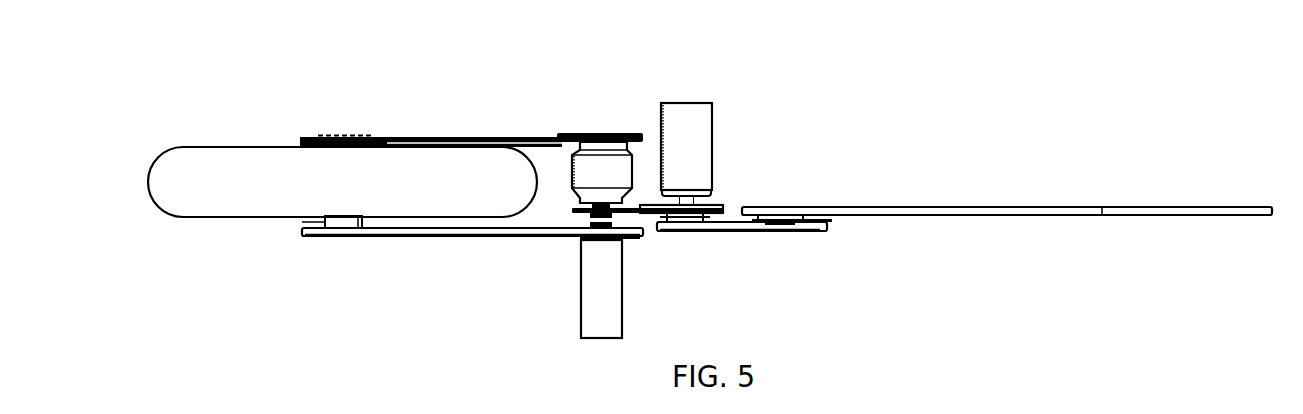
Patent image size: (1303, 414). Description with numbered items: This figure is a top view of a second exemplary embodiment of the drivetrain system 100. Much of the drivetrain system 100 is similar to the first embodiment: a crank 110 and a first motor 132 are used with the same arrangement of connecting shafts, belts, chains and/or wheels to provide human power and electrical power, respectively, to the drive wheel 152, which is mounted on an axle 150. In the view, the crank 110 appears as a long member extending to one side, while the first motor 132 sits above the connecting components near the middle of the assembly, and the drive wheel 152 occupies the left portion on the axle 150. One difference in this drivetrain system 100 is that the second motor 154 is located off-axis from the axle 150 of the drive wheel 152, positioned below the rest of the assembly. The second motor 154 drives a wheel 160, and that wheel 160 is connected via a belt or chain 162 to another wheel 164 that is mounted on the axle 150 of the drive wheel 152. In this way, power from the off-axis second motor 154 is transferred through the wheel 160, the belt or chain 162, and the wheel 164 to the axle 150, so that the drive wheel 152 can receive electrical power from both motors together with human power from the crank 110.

The drivetrain system 100 is at (180, 48).
The crank 110 is at (1240, 207).
The first motor 132 is at (713, 125).
The axle 150 is at (308, 222).
The drive wheel 152 is at (212, 147).
The second motor 154 is at (580, 317).
The wheel 160 is at (640, 237).
The belt or chain 162 is at (498, 237).
The wheel 164 is at (370, 238).